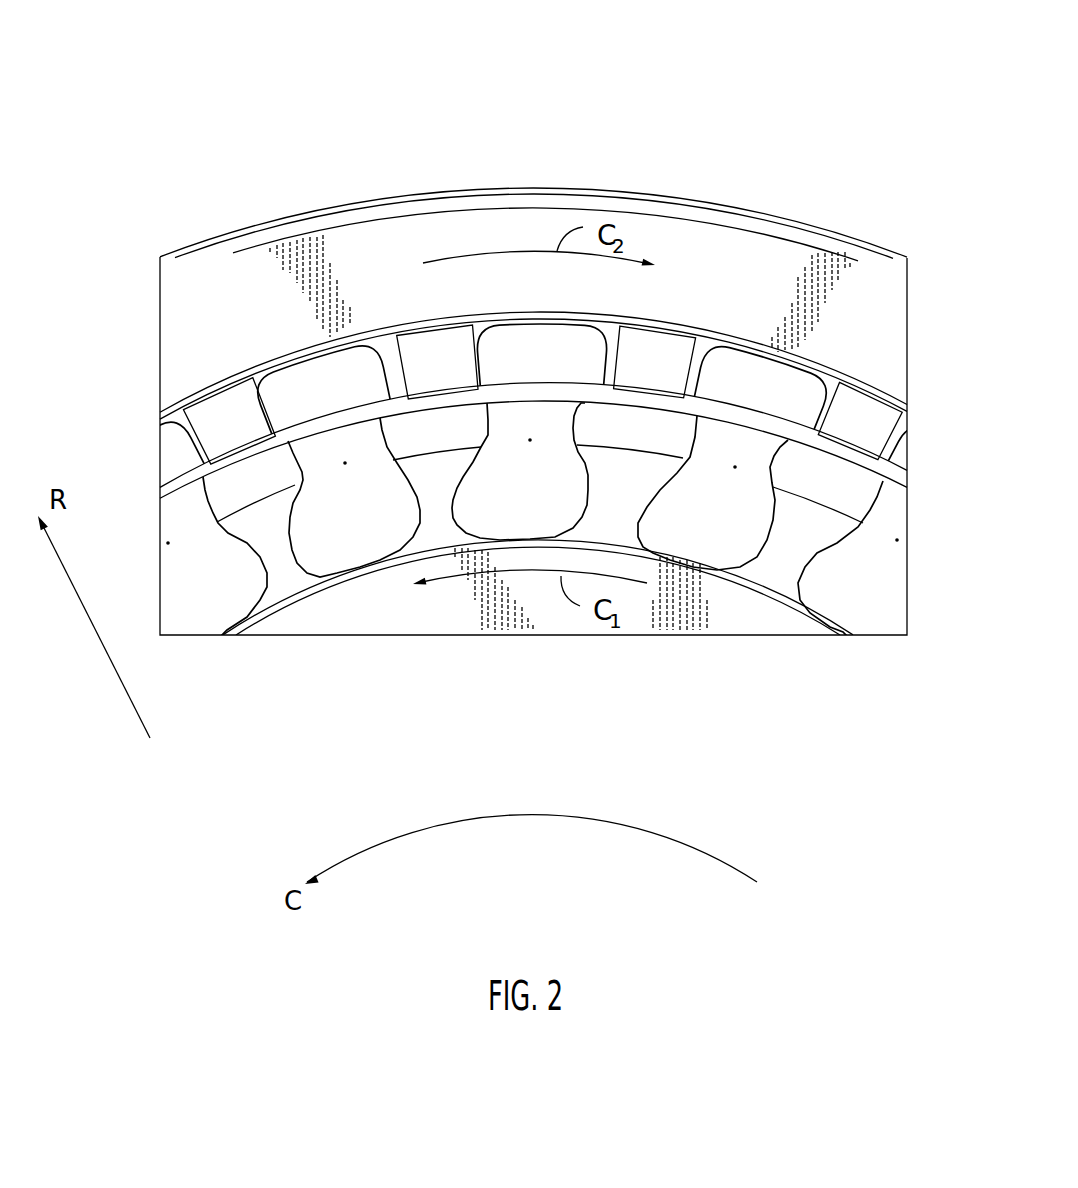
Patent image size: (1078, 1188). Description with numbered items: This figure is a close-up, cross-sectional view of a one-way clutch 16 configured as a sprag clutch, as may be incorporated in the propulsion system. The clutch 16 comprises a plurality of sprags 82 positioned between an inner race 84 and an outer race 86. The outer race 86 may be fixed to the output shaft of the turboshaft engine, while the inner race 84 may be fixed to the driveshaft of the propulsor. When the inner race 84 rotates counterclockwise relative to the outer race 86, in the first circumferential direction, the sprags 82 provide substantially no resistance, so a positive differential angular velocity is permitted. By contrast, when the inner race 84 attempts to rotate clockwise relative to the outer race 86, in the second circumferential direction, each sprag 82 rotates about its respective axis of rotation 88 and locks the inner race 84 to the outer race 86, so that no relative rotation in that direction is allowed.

The one-way clutch 16 is at (792, 85).
The sprags 82 is at (555, 337).
The inner race 84 is at (416, 620).
The outer race 86 is at (307, 252).
The axis of rotation 88 is at (733, 465).